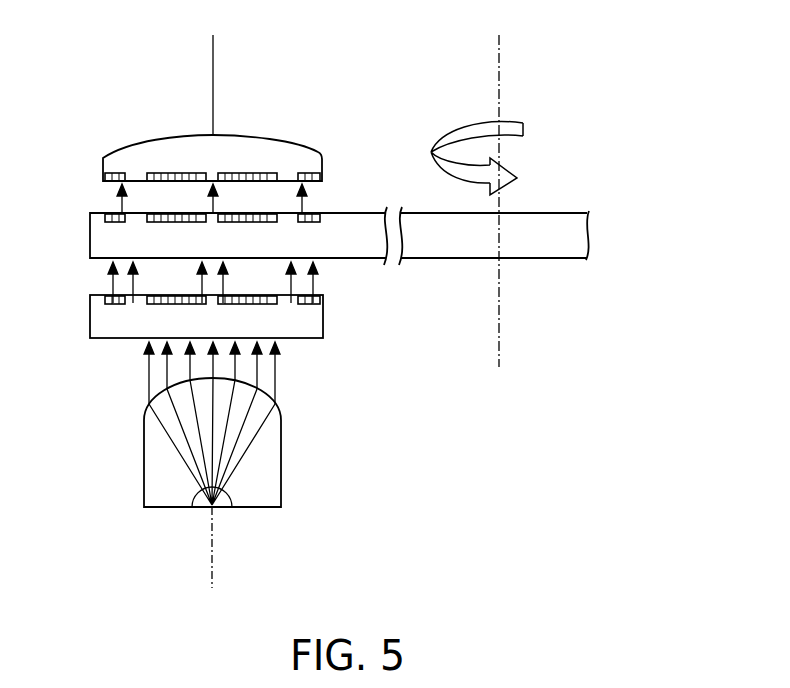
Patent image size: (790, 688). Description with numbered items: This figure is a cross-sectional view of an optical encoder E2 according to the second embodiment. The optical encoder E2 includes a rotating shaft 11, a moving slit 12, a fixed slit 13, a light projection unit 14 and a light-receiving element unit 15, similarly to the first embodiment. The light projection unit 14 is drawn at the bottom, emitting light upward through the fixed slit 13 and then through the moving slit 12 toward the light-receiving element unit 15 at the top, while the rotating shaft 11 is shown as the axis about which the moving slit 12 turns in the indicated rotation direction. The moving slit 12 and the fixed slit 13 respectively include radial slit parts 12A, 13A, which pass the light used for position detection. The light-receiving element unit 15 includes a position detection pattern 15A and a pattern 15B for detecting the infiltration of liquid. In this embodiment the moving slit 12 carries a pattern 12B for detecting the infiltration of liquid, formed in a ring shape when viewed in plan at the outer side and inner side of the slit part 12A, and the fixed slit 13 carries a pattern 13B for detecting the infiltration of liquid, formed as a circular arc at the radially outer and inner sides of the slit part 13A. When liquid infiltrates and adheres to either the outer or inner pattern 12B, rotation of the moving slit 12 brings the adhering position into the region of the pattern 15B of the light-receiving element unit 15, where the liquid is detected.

The rotating shaft 11 is at (500, 332).
The moving slit 12 is at (90, 232).
The radial slit part 12A is at (267, 222).
The pattern for detecting the infiltration of liquid 12B is at (108, 216).
The fixed slit 13 is at (90, 316).
The radial slit part 13A is at (268, 304).
The pattern for detecting the infiltration of liquid 13B is at (108, 297).
The light projection unit 14 is at (143, 468).
The light-receiving element unit 15 is at (132, 143).
The position detection pattern 15A is at (245, 172).
The pattern for detecting the infiltration of liquid 15B is at (307, 172).
The optical encoder E2 is at (607, 93).